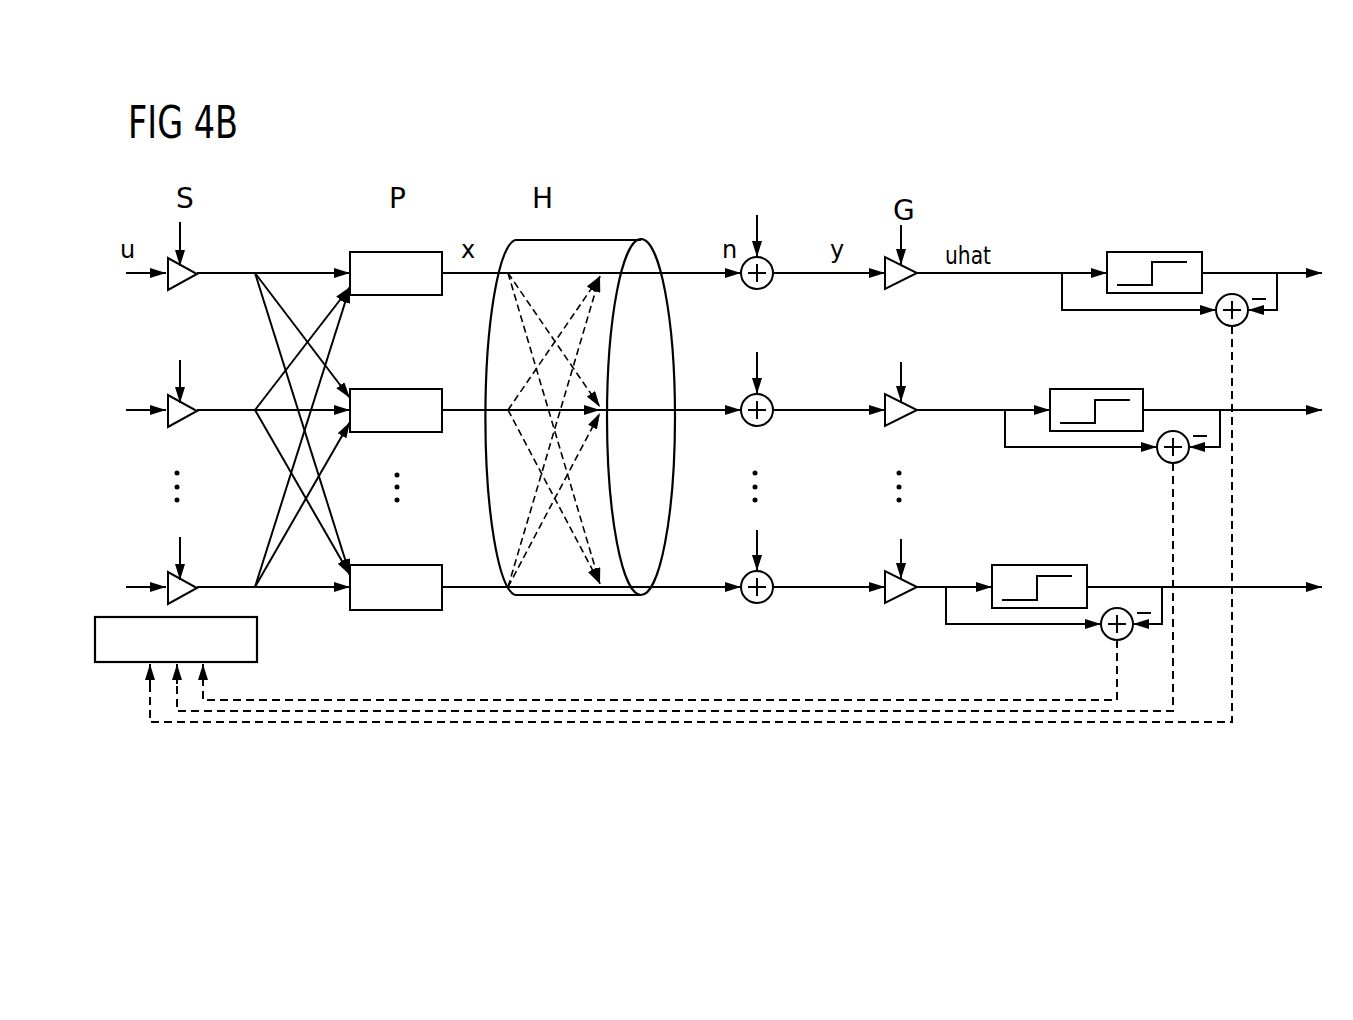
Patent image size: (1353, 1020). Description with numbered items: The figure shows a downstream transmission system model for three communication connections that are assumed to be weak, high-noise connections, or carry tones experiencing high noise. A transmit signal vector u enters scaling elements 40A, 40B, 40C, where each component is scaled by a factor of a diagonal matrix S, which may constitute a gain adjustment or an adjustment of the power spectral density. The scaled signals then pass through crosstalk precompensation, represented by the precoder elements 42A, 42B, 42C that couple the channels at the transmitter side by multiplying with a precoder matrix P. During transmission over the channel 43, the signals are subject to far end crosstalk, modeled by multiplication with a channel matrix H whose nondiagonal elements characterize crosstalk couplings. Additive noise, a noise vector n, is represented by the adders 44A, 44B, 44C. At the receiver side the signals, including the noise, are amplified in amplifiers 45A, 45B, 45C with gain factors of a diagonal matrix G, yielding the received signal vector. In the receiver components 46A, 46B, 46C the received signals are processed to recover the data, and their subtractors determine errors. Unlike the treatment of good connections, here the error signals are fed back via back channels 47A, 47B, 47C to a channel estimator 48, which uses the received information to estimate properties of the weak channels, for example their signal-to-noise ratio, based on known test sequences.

The scaling element 40A is at (193, 264).
The scaling element 40B is at (193, 401).
The scaling element 40C is at (193, 578).
The crosstalk precompensator element 42A is at (395, 296).
The crosstalk precompensator element 42B is at (385, 433).
The crosstalk precompensator element 42C is at (395, 611).
The transmission channel 43 is at (577, 240).
The adder 44A is at (768, 262).
The adder 44B is at (768, 398).
The adder 44C is at (765, 574).
The amplifier 45A is at (910, 264).
The amplifier 45B is at (910, 400).
The amplifier 45C is at (905, 577).
The receiver component 46A is at (1216, 268).
The receiver component 46B is at (1157, 405).
The receiver component 46C is at (1100, 583).
The back channel 47A is at (810, 700).
The back channel 47B is at (755, 712).
The back channel 47C is at (832, 724).
The channel estimator 48 is at (257, 638).